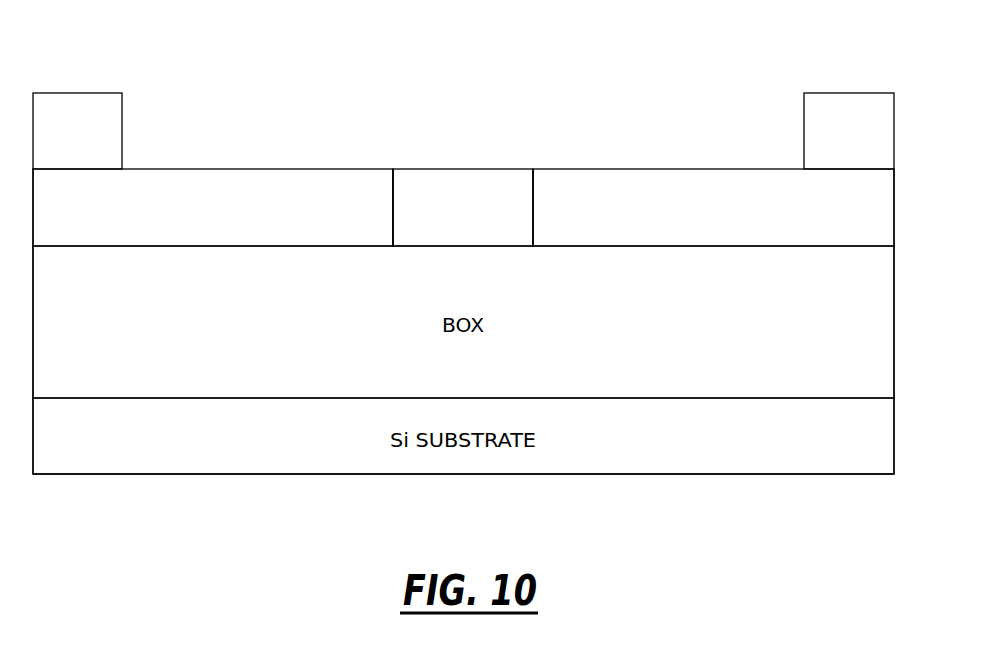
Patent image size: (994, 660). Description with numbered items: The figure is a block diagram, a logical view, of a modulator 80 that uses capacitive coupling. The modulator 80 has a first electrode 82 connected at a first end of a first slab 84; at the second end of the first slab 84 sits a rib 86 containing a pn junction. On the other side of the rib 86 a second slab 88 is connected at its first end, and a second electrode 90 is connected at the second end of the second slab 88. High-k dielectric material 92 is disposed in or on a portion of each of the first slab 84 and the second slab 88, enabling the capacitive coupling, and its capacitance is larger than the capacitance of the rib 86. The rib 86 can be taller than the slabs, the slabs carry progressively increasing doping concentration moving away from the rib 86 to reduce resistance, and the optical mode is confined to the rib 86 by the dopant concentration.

The modulator 80 is at (477, 56).
The first electrode 82 is at (65, 145).
The first slab 84 is at (173, 221).
The rib 86 is at (450, 221).
The second slab 88 is at (736, 221).
The second electrode 90 is at (836, 145).
The high-k dielectric material 92 is at (260, 192).